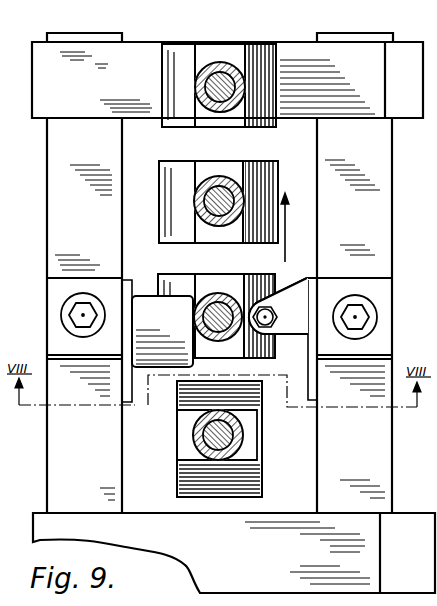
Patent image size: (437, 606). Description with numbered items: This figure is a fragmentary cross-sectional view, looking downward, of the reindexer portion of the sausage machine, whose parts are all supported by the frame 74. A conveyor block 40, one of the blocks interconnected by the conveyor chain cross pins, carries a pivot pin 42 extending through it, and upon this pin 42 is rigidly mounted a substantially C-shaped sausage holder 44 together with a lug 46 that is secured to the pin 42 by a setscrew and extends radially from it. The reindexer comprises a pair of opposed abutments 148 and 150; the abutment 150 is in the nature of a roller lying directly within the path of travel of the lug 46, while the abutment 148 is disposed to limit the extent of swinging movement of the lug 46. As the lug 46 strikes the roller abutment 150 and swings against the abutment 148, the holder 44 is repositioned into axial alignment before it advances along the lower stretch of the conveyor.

The frame 74 is at (57, 194).
The lug 46 is at (210, 127).
The sausage holder 44 is at (238, 165).
The abutment 148 is at (180, 302).
The abutment 150 is at (262, 276).
The block 40 is at (197, 423).
The pivot pin 42 is at (203, 446).